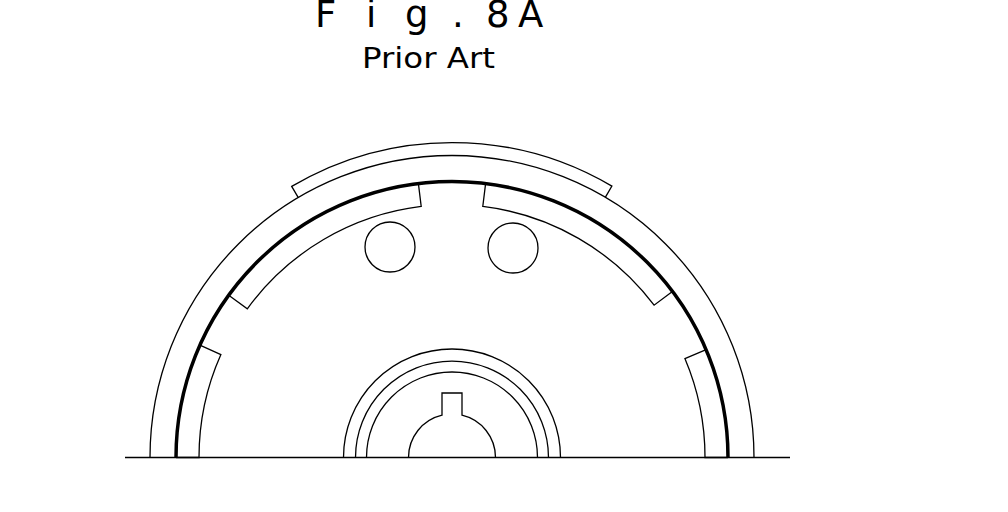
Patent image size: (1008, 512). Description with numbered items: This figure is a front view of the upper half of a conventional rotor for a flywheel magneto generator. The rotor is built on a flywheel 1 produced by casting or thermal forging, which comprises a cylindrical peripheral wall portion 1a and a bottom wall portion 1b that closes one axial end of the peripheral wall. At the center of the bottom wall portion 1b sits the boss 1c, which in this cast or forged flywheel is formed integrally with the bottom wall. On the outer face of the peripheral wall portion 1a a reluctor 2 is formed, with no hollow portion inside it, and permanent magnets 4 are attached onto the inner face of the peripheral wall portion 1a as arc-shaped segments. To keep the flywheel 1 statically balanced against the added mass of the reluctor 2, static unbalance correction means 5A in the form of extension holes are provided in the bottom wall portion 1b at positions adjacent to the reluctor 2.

The flywheel 1 is at (497, 307).
The cylindrical peripheral wall portion 1a is at (693, 272).
The bottom wall portion 1b is at (610, 373).
The boss 1c is at (410, 403).
The reluctor 2 is at (357, 163).
The permanent magnets 4 is at (265, 260).
The static unbalance correction means 5A is at (388, 245).